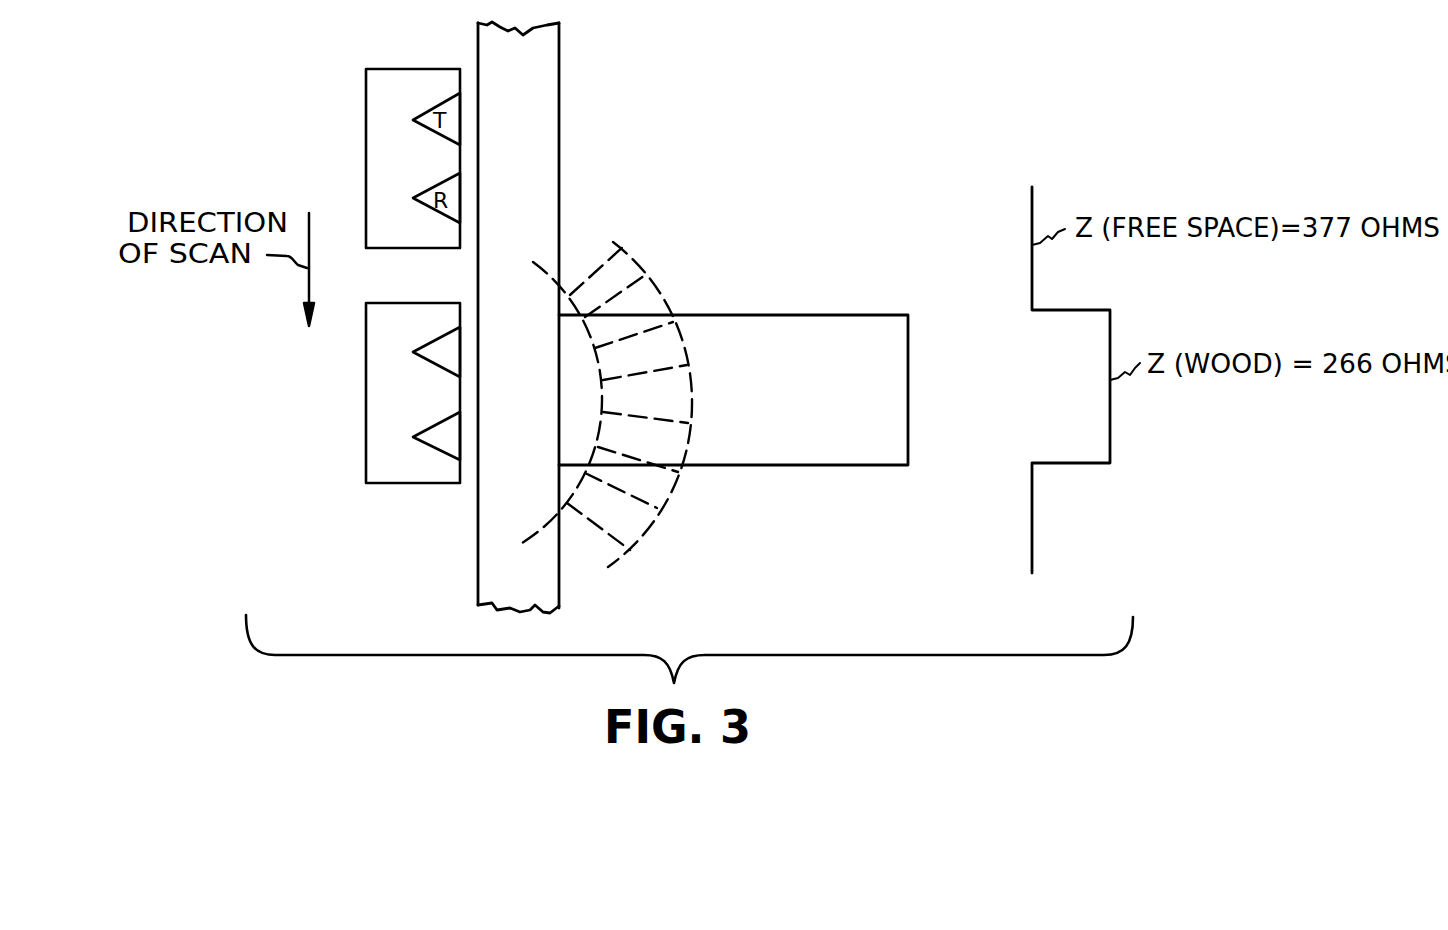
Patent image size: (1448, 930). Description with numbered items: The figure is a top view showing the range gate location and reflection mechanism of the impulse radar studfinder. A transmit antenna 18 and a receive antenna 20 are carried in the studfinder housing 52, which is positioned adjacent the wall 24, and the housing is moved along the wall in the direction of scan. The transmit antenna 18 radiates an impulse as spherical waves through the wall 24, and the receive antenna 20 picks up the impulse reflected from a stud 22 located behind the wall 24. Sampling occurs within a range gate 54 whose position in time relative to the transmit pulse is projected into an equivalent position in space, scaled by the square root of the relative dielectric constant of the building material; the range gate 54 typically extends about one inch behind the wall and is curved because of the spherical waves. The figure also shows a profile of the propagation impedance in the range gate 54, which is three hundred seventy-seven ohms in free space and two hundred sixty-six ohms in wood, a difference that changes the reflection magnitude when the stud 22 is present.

The transmit antenna 18 is at (413, 355).
The receive antenna 20 is at (413, 440).
The stud 22 is at (836, 383).
The wall board 24 is at (559, 90).
The studfinder housing 52 is at (416, 483).
The range gate 54 is at (645, 270).